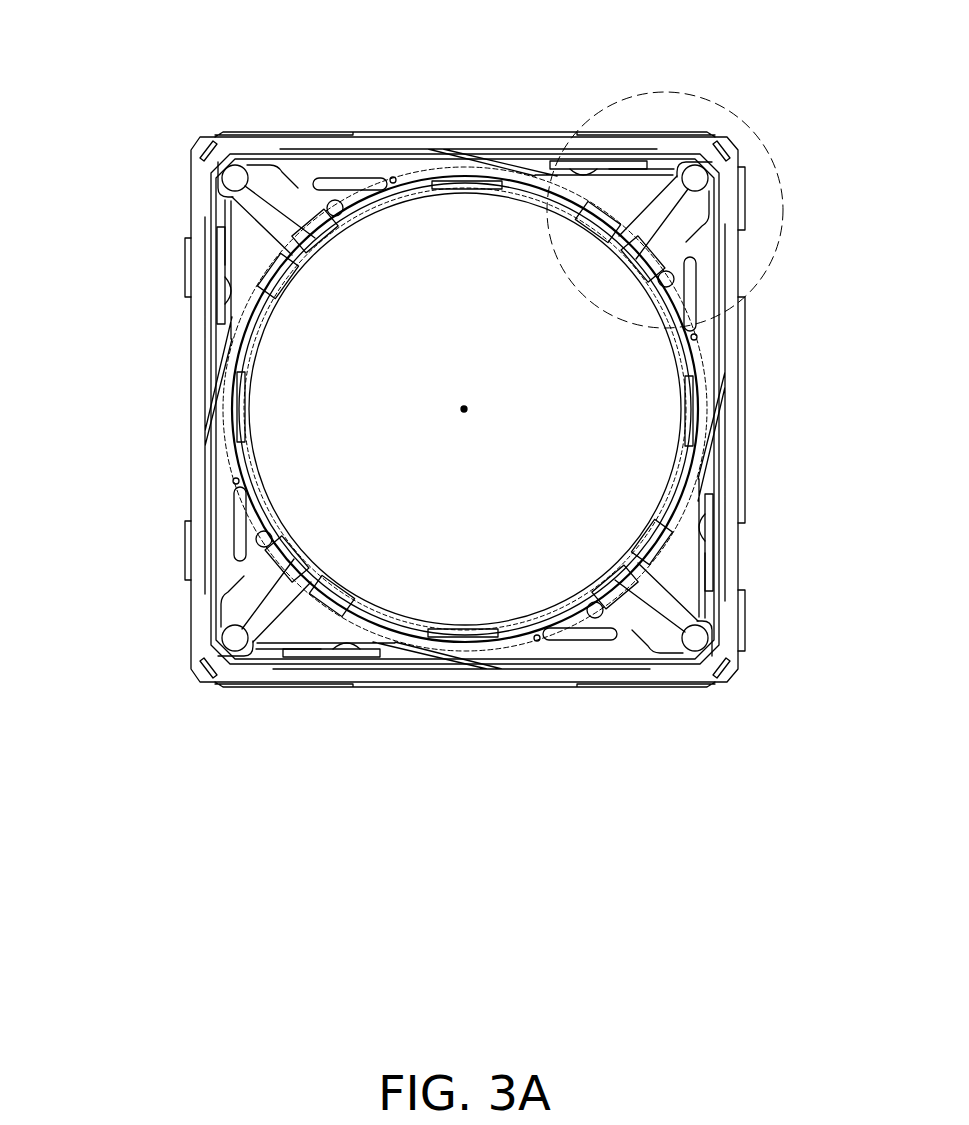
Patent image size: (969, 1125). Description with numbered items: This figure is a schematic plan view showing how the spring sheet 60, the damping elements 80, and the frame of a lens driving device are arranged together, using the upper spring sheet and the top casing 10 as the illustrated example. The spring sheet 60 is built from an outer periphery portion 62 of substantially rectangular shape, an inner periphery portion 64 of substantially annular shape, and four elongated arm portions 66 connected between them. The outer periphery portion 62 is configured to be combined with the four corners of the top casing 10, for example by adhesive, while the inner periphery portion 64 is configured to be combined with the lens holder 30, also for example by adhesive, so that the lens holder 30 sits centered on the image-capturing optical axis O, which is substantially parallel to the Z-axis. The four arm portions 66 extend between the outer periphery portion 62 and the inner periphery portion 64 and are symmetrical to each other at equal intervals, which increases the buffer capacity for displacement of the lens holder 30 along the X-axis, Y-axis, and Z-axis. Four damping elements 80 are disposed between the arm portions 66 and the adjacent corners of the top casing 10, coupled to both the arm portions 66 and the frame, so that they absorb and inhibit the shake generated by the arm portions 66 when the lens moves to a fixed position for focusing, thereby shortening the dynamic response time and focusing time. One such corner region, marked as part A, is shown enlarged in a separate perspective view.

The top casing 10 is at (223, 131).
The lens holder 30 is at (316, 559).
The spring sheet 60 is at (430, 136).
The outer periphery portion 62 is at (506, 146).
The inner periphery portion 64 is at (352, 212).
The arm portions 66 is at (258, 270).
The damping elements 80 is at (236, 178).
The optical axis O is at (468, 409).
The part A is at (720, 104).